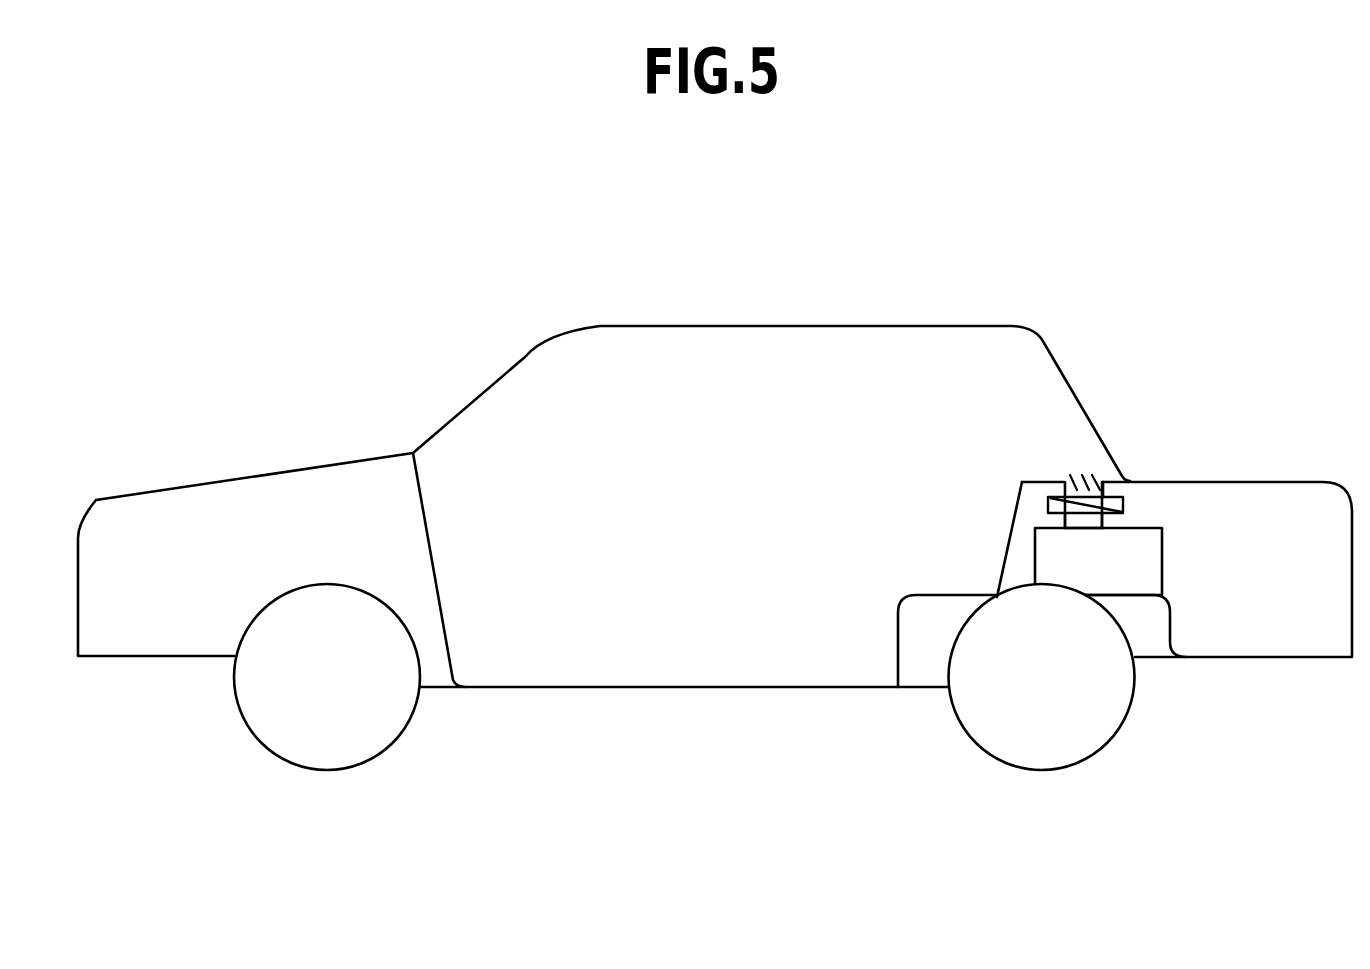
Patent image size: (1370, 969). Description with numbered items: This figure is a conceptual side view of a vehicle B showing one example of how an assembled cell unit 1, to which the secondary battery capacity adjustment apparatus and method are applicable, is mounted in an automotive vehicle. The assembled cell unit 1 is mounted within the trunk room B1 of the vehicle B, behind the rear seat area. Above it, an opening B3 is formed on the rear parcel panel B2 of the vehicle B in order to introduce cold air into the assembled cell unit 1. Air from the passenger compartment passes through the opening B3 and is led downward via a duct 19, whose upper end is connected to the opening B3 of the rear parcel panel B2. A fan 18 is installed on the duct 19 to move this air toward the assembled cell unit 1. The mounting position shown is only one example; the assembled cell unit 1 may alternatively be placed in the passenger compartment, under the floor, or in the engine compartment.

The vehicle B is at (878, 299).
The trunk room B1 is at (1243, 508).
The rear parcel panel B2 is at (1025, 482).
The opening B3 is at (1088, 470).
The fan 18 is at (1048, 502).
The duct 19 is at (1065, 522).
The assembled cell unit 1 is at (1175, 563).